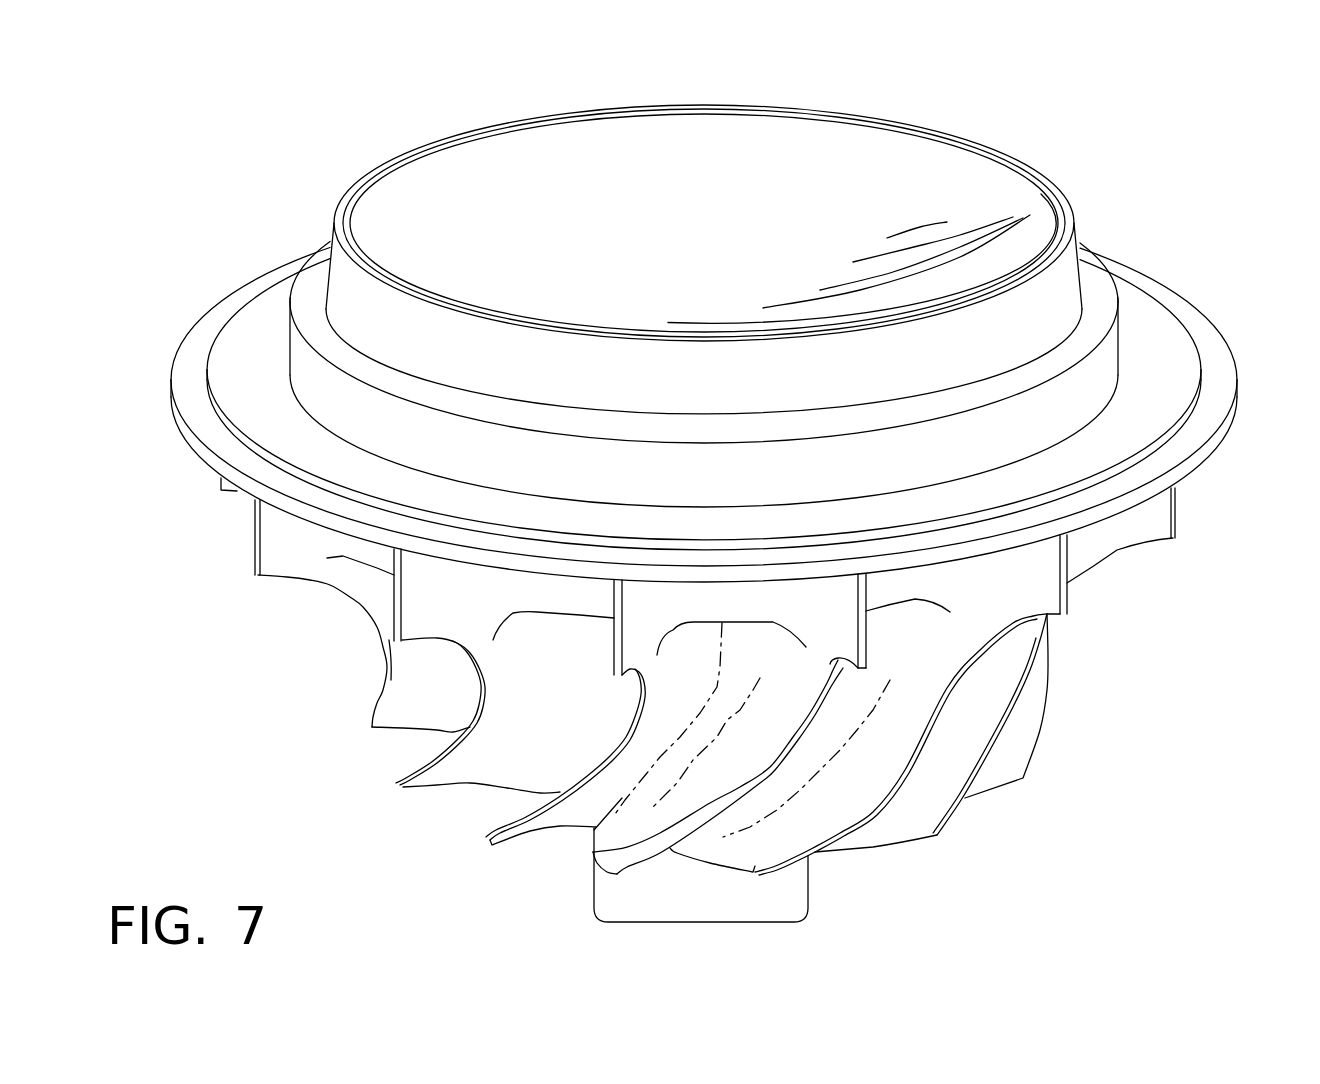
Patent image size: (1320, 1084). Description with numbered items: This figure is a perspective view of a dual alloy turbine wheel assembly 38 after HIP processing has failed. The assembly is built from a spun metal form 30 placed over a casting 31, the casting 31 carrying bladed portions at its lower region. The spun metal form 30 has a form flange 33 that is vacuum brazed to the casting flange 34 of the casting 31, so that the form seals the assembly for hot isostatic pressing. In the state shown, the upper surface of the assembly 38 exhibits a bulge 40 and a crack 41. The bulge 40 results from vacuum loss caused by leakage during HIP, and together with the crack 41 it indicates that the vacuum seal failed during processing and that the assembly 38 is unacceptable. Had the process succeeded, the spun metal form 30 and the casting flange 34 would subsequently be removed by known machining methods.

The dual alloy turbine wheel assembly 38 is at (226, 100).
The bulge 40 is at (967, 173).
The crack 41 is at (445, 209).
The spun metal form 30 is at (1090, 272).
The casting flange 34 is at (1218, 357).
The form flange 33 is at (1027, 483).
The casting 31 is at (409, 717).